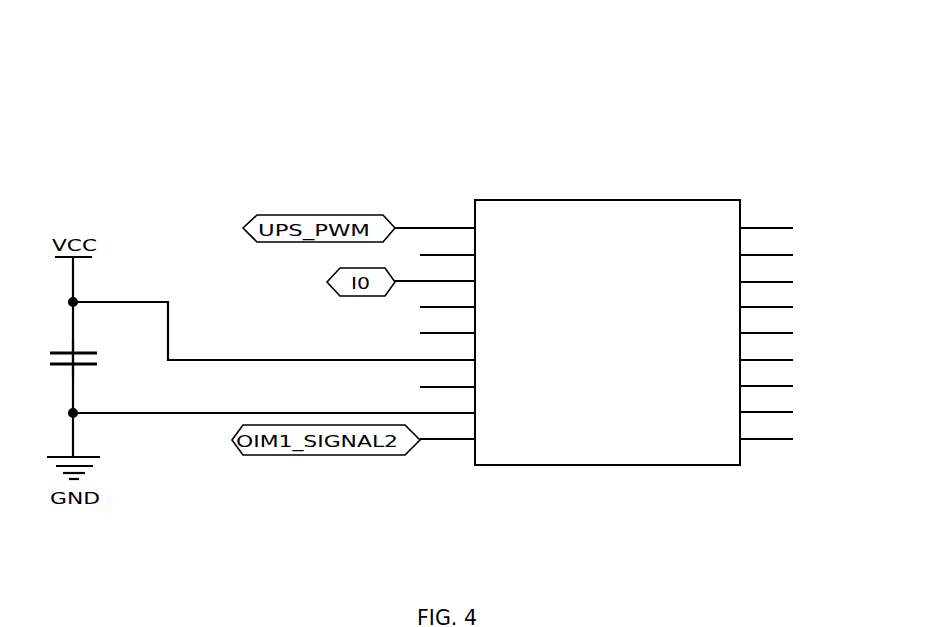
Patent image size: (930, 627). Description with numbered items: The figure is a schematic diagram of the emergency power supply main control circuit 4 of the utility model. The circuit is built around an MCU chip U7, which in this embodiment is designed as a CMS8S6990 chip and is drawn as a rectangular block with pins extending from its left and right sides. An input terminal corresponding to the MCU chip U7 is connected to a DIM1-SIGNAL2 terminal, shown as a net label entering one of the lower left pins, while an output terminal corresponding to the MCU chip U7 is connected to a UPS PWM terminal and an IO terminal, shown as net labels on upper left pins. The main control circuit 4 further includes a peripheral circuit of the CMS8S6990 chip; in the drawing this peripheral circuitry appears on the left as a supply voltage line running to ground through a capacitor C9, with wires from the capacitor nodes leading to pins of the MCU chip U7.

The emergency power supply main control circuit 4 is at (594, 289).
The MCU chip U7 is at (607, 324).
The capacitor C9 is at (87, 358).